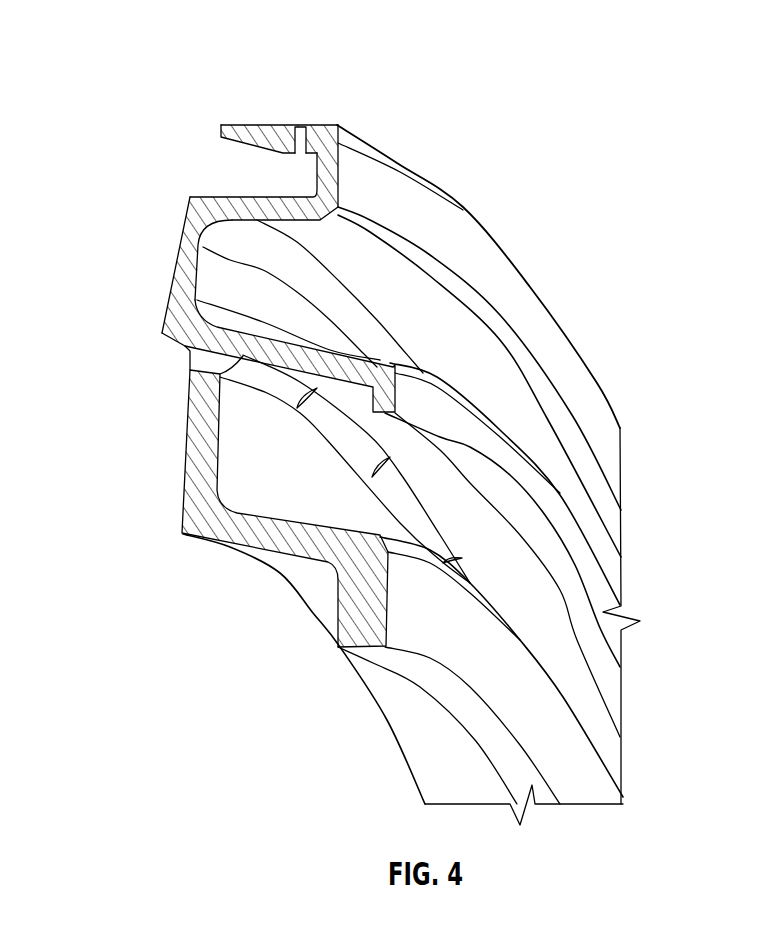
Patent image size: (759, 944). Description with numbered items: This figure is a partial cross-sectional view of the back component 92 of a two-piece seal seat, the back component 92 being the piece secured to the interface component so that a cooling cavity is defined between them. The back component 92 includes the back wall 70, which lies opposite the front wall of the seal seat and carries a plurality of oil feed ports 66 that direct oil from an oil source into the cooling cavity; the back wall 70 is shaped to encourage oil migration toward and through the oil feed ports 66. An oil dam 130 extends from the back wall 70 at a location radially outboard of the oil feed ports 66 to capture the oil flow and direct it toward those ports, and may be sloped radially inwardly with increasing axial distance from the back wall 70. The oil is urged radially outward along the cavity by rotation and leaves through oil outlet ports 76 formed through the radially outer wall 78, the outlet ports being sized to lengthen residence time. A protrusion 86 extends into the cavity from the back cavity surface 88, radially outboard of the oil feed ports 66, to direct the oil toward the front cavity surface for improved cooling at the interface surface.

The back component 92 is at (197, 69).
The radially outer wall 78 is at (272, 130).
The oil outlet ports 76 is at (302, 130).
The back cavity surface 88 is at (183, 243).
The protrusion 86 is at (162, 333).
The oil feed ports 66 is at (200, 363).
The back wall 70 is at (197, 468).
The oil dam 130 is at (547, 725).